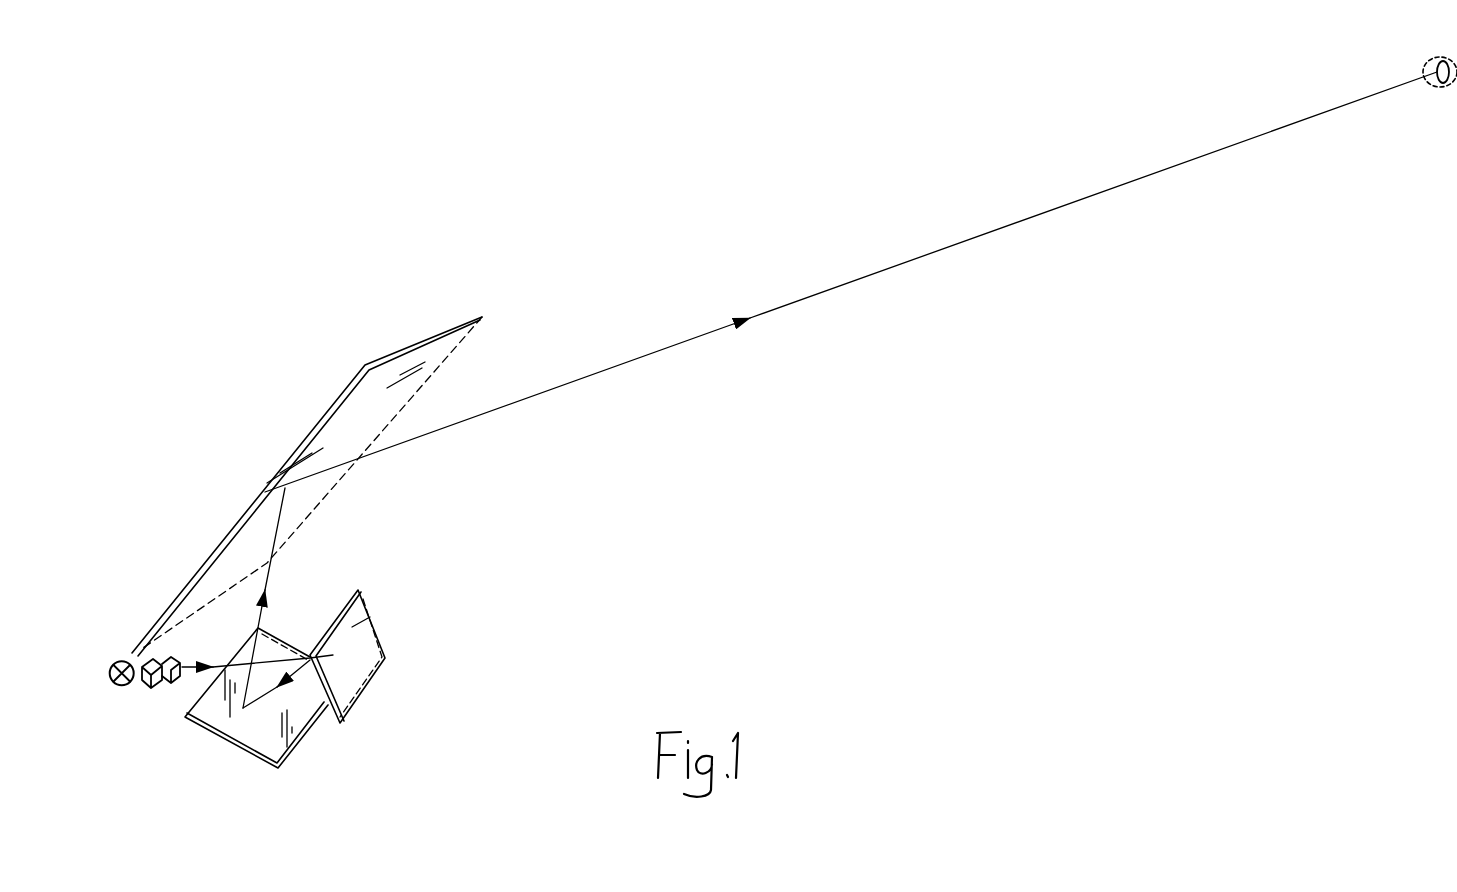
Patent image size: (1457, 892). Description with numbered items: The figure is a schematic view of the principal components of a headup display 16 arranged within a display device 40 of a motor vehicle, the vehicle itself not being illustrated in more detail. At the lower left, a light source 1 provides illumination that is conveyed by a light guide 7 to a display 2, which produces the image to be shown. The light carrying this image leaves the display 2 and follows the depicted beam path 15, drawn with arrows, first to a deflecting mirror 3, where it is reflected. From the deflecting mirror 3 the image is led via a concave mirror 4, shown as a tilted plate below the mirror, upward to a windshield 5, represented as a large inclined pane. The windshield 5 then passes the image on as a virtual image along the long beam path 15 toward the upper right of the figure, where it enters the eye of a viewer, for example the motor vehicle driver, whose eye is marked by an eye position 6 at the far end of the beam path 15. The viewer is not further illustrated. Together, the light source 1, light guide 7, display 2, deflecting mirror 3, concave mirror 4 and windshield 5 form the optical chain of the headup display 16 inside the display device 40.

The light source 1 is at (122, 690).
The light guide 7 is at (148, 690).
The display 2 is at (173, 690).
The deflecting mirror 3 is at (353, 627).
The concave mirror 4 is at (277, 745).
The windshield 5 is at (323, 433).
The eye position 6 is at (1445, 88).
The beam path 15 is at (972, 238).
The headup display 16 is at (302, 590).
The display device 40 is at (570, 280).